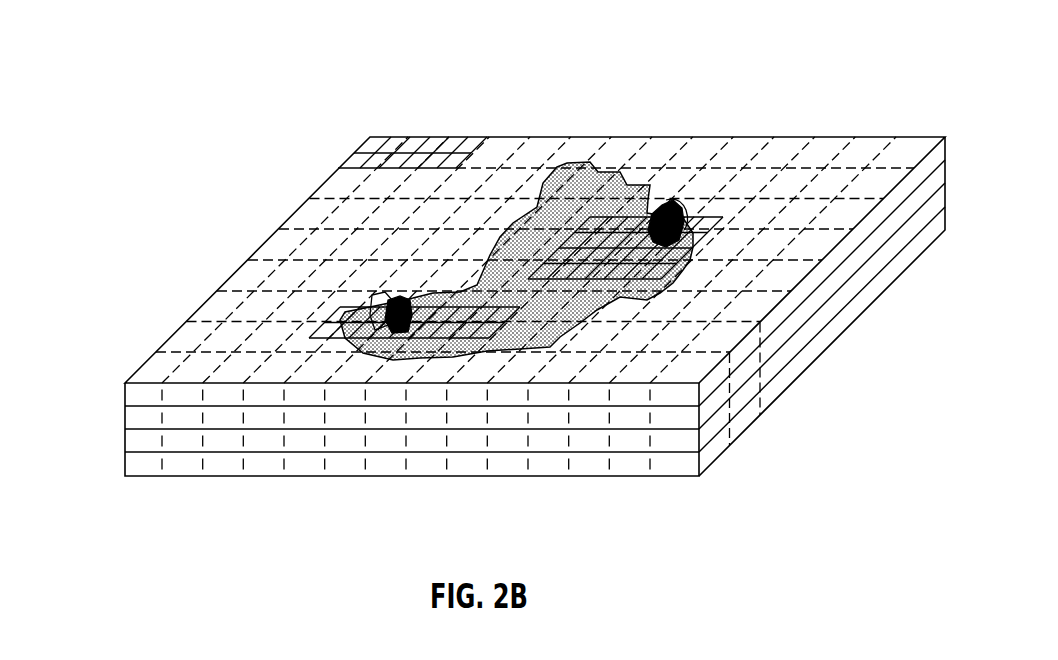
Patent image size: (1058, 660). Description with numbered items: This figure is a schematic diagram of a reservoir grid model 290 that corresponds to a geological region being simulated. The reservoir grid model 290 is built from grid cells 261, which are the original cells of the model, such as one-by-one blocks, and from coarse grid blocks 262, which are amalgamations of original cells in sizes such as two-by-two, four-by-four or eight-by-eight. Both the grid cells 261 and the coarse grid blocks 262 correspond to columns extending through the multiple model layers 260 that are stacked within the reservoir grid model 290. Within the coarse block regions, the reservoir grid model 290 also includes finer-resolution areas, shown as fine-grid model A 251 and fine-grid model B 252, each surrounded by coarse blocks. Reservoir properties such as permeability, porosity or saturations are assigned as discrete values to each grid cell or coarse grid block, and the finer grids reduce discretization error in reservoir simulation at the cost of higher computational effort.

The reservoir grid model 290 is at (222, 100).
The grid cells 261 is at (353, 158).
The coarse grid blocks 262 is at (502, 146).
The fine-grid model B 252 is at (718, 217).
The fine-grid model A 251 is at (340, 307).
The model layers 260 is at (111, 384).